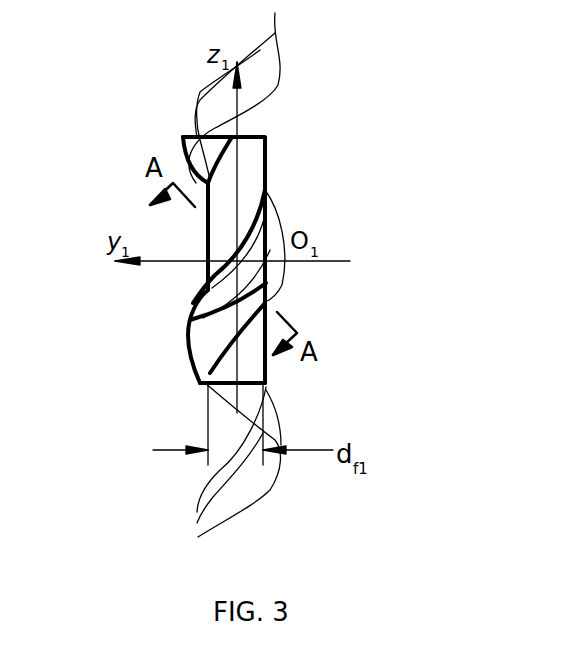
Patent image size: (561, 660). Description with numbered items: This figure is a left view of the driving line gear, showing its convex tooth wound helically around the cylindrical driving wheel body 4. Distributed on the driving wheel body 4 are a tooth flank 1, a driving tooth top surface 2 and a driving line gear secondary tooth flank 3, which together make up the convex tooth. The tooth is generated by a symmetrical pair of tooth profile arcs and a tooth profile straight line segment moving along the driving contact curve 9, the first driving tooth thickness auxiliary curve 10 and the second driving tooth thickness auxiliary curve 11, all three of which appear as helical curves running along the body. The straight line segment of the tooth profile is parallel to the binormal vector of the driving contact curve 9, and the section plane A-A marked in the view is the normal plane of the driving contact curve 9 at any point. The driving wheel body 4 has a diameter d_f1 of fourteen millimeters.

The tooth flank of driving line gear 1 is at (210, 282).
The tooth top surface of driving line gear 2 is at (197, 305).
The secondary tooth flank of driving line gear 3 is at (193, 325).
The driving wheel body 4 is at (257, 360).
The driving contact curve 9 is at (262, 52).
The first driving tooth thickness auxiliary curve 10 is at (253, 77).
The second driving tooth thickness auxiliary curve 11 is at (252, 107).